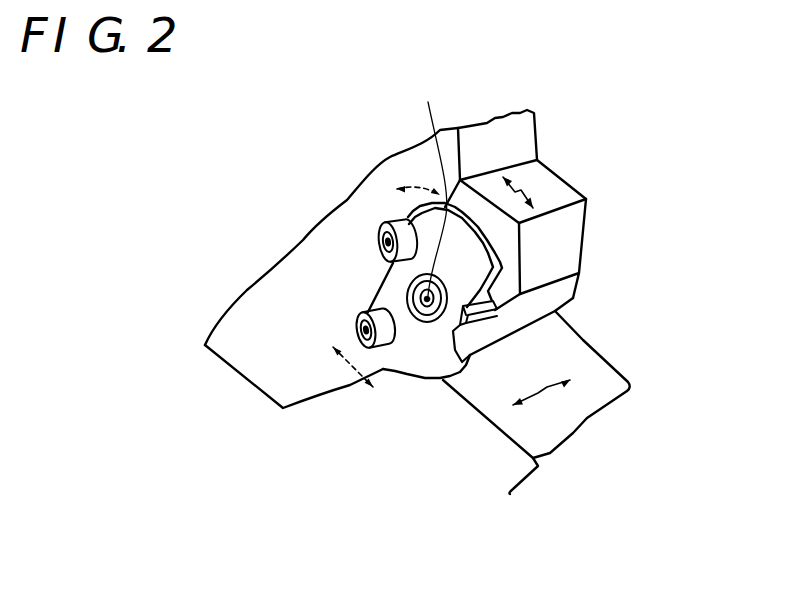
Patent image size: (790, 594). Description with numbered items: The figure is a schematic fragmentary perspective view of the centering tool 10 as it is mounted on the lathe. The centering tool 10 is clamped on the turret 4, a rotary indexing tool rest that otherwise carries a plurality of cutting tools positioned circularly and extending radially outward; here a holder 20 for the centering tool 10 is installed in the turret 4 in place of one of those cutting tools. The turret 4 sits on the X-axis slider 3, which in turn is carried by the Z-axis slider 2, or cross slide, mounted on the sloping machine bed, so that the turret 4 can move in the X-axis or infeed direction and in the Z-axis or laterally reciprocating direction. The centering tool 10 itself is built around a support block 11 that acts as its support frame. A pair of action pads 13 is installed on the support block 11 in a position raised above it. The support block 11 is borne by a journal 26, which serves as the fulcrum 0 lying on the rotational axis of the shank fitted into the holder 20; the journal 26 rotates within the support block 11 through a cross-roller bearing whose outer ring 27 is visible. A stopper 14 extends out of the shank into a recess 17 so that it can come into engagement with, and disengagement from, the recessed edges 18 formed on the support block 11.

The Z-axis slider 2 is at (598, 388).
The X-axis slider 3 is at (553, 188).
The turret 4 is at (520, 138).
The centering tool 10 is at (390, 285).
The support block 11 is at (418, 362).
The action pads 13 is at (396, 232).
The stopper 14 is at (482, 327).
The recess 17 is at (477, 330).
The recessed edges 18 is at (473, 365).
The holder 20 is at (568, 242).
The journal 26 is at (430, 322).
The outer ring 27 is at (431, 184).
The fulcrum 0 is at (426, 305).